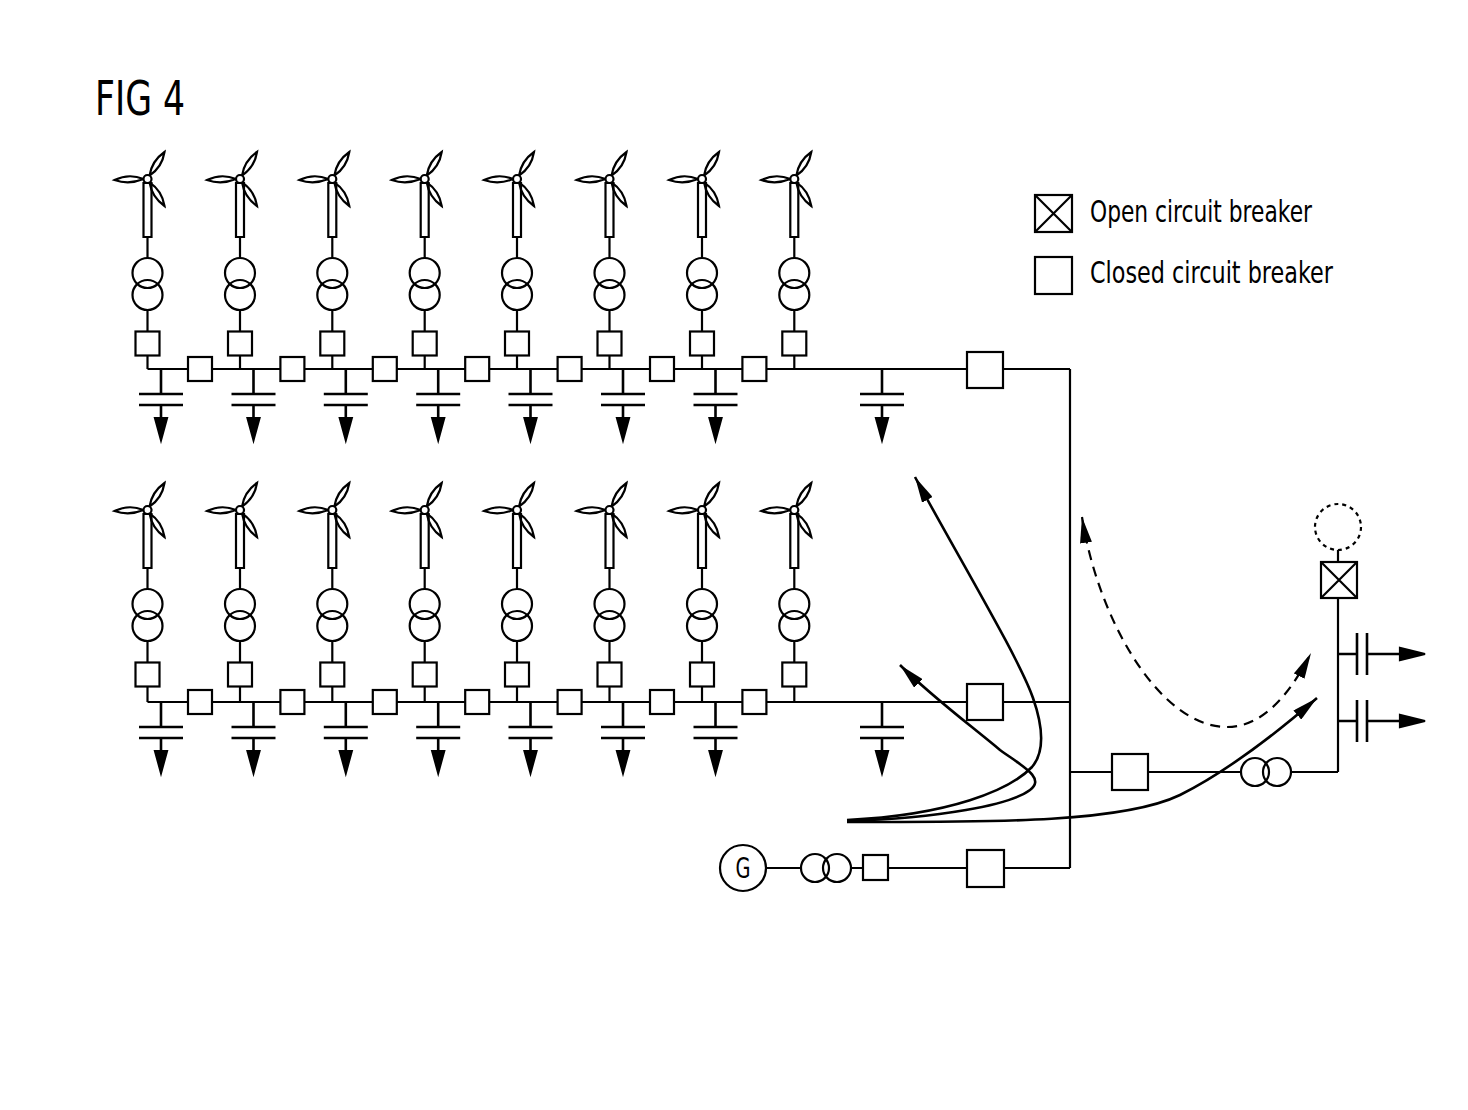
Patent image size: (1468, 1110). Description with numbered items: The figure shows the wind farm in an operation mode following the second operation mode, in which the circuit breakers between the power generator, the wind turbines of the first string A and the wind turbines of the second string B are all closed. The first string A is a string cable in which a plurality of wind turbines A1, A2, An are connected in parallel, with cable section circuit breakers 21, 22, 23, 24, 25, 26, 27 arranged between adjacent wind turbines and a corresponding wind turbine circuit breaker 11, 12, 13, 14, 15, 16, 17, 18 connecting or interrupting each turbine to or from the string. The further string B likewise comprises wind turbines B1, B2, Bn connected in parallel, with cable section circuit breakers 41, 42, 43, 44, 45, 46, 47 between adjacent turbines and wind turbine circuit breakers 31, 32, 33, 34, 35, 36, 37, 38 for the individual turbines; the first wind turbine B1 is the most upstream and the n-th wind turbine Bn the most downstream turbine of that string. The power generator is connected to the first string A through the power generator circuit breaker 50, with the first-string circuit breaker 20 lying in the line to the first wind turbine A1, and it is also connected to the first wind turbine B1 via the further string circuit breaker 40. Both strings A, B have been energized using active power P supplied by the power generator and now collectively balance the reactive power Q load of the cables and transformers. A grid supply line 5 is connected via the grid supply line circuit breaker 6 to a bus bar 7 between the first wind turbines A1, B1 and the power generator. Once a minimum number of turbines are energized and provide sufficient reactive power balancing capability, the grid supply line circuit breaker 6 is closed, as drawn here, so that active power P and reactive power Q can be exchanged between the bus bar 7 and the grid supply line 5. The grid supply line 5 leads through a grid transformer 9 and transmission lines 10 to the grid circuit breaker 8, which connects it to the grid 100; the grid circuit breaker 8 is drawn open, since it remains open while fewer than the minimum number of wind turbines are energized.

The grid 100 is at (1373, 464).
The grid supply line 5 is at (1340, 760).
The grid supply line circuit breaker 6 is at (1130, 754).
The bus bar 7 is at (1072, 855).
The grid circuit breaker 8 is at (1357, 580).
The grid transformer 9 is at (1272, 786).
The transmission lines 10 is at (1367, 645).
The wind turbine circuit breaker 11 is at (806, 674).
The wind turbine circuit breaker 12 is at (714, 674).
The wind turbine circuit breaker 13 is at (622, 674).
The wind turbine circuit breaker 14 is at (529, 674).
The wind turbine circuit breaker 15 is at (437, 674).
The wind turbine circuit breaker 16 is at (344, 674).
The wind turbine circuit breaker 17 is at (252, 674).
The wind turbine circuit breaker 18 is at (160, 674).
The first-string circuit breaker 20 is at (985, 683).
The cable section circuit breaker 21 is at (754, 714).
The cable section circuit breaker 22 is at (662, 714).
The cable section circuit breaker 23 is at (570, 714).
The cable section circuit breaker 24 is at (477, 714).
The cable section circuit breaker 25 is at (385, 714).
The cable section circuit breaker 26 is at (292, 714).
The cable section circuit breaker 27 is at (200, 714).
The wind turbine circuit breaker 31 is at (806, 344).
The wind turbine circuit breaker 32 is at (714, 344).
The wind turbine circuit breaker 33 is at (622, 344).
The wind turbine circuit breaker 34 is at (529, 344).
The wind turbine circuit breaker 35 is at (437, 344).
The wind turbine circuit breaker 36 is at (344, 344).
The wind turbine circuit breaker 37 is at (252, 344).
The wind turbine circuit breaker 38 is at (160, 344).
The further string circuit breaker 40 is at (985, 352).
The cable section circuit breaker 41 is at (754, 381).
The cable section circuit breaker 42 is at (662, 381).
The cable section circuit breaker 43 is at (570, 381).
The cable section circuit breaker 44 is at (477, 381).
The cable section circuit breaker 45 is at (385, 381).
The cable section circuit breaker 46 is at (292, 381).
The cable section circuit breaker 47 is at (200, 381).
The power generator circuit breaker 50 is at (985, 887).
The first string A is at (148, 690).
The further string B is at (148, 362).
The first wind turbine A1 is at (780, 568).
The wind turbine A2 is at (688, 567).
The n-th wind turbine An is at (133, 567).
The first wind turbine B1 is at (780, 237).
The wind turbine B2 is at (688, 236).
The n-th wind turbine Bn is at (133, 236).
The active power P is at (1072, 656).
The reactive power Q is at (1196, 622).